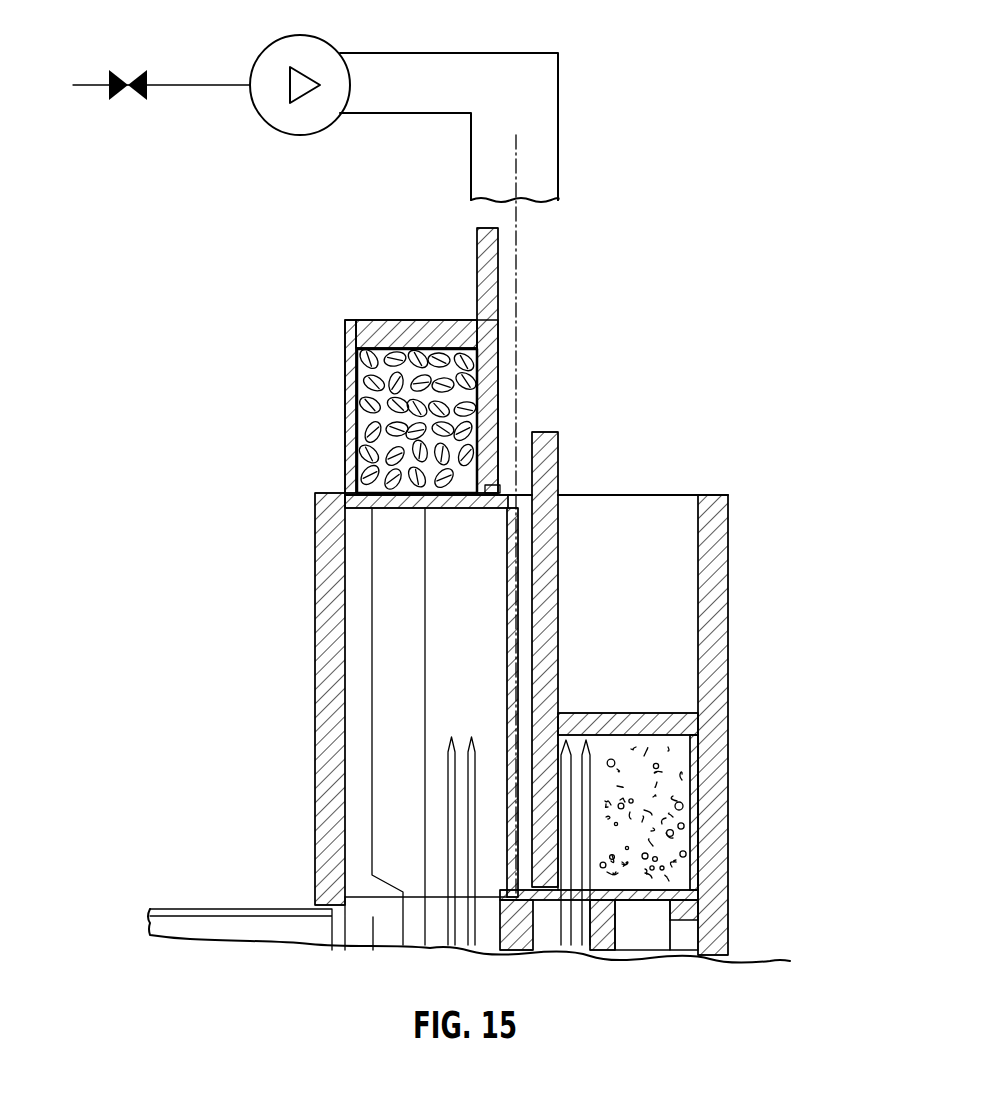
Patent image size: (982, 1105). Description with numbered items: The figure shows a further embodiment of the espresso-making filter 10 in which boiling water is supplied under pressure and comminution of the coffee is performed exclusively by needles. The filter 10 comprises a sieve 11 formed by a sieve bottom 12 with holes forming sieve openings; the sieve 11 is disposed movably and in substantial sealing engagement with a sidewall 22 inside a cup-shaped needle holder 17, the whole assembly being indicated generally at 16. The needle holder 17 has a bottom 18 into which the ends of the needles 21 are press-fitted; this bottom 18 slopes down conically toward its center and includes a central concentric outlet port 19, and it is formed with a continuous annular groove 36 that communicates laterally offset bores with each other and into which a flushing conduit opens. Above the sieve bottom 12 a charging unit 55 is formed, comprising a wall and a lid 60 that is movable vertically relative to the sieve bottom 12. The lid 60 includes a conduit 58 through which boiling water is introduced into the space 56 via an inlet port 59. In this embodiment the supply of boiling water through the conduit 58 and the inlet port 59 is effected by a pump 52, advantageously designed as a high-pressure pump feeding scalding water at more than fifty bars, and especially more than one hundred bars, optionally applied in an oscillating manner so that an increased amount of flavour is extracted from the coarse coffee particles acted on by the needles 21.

The espresso-making filter 10 is at (290, 720).
The sieve 11 is at (625, 840).
The sieve bottom 12 is at (352, 467).
The vessel 16 is at (710, 477).
The needle holder 17 is at (713, 575).
The bottom 18 is at (655, 882).
The outlet port 19 is at (585, 940).
The needles 21 is at (605, 765).
The sidewall 22 is at (698, 692).
The annular groove 36 is at (683, 942).
The pump 52 is at (317, 43).
The charging unit 55 is at (384, 260).
The space 56 is at (390, 388).
The conduit 58 is at (548, 110).
The inlet port 59 is at (497, 492).
The lid 60 is at (378, 332).